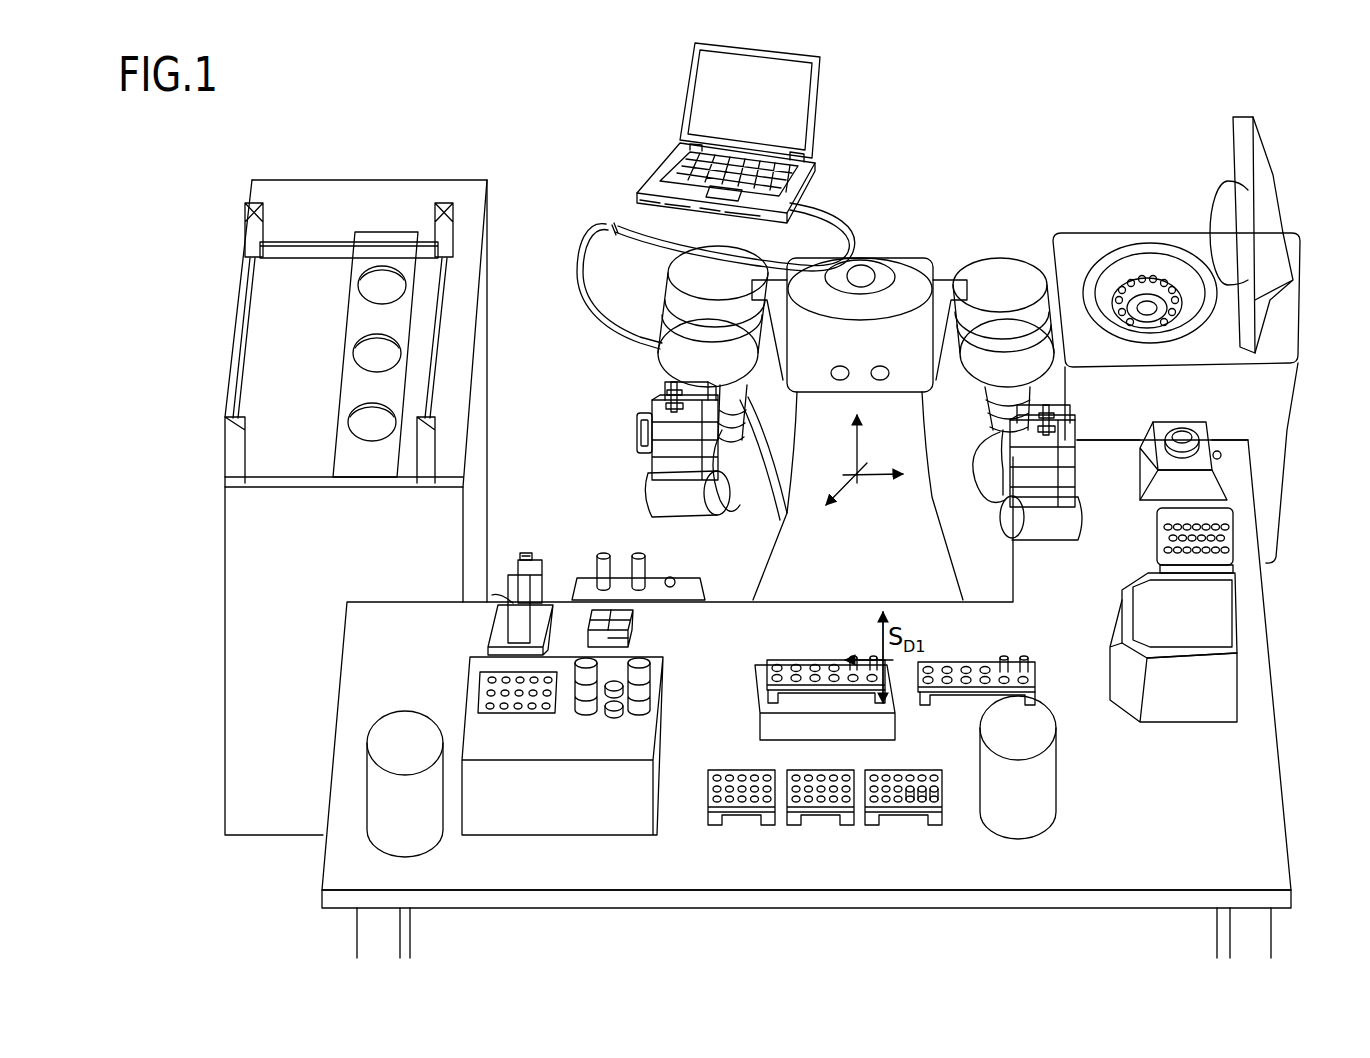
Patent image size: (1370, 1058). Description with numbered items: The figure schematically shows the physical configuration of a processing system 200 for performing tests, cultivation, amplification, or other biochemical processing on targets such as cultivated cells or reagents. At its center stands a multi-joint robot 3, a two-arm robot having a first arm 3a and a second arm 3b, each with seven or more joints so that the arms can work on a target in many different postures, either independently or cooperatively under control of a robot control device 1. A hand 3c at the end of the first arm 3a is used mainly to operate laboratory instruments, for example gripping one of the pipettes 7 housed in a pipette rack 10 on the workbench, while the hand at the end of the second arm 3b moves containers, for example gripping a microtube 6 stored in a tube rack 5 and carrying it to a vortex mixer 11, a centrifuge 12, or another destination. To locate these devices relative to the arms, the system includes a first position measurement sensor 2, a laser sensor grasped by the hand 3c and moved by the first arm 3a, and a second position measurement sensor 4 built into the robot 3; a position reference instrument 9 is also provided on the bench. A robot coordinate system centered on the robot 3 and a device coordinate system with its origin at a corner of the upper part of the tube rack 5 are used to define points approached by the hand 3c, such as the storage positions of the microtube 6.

The robot control device 1 is at (820, 82).
The first position measurement sensor 2 is at (533, 622).
The robot 3 is at (832, 400).
The first arm 3a is at (648, 477).
The second arm 3b is at (1047, 540).
The hand 3c is at (664, 388).
The second position measurement sensor 4 is at (637, 421).
The tube rack 5 is at (787, 660).
The microtube 6 is at (850, 657).
The pipettes 7 is at (640, 555).
The position reference instrument 9 is at (633, 625).
The pipette rack 10 is at (587, 582).
The vortex mixer 11 is at (1212, 435).
The centrifuge 12 is at (1293, 413).
The processing system 200 is at (203, 727).